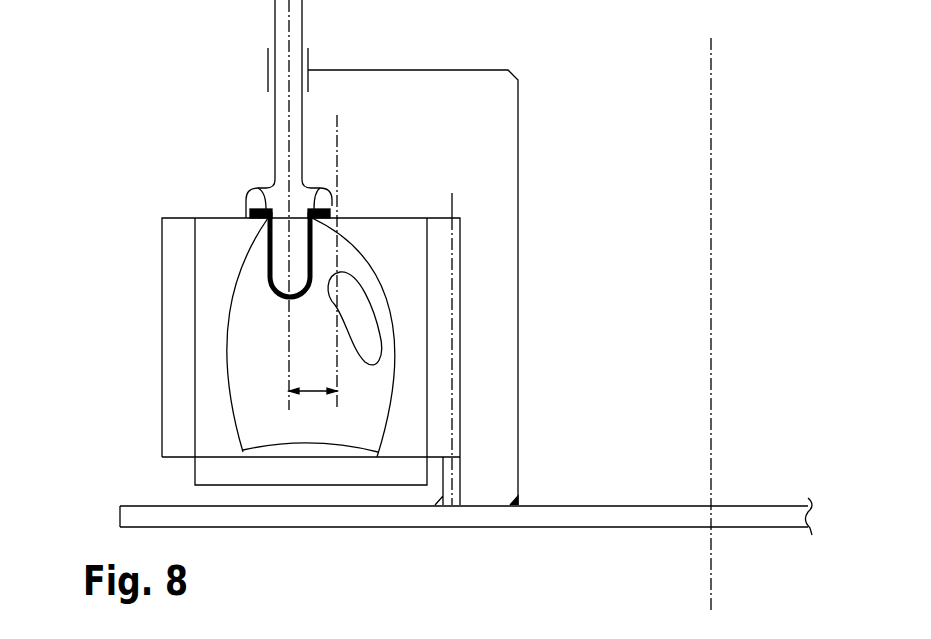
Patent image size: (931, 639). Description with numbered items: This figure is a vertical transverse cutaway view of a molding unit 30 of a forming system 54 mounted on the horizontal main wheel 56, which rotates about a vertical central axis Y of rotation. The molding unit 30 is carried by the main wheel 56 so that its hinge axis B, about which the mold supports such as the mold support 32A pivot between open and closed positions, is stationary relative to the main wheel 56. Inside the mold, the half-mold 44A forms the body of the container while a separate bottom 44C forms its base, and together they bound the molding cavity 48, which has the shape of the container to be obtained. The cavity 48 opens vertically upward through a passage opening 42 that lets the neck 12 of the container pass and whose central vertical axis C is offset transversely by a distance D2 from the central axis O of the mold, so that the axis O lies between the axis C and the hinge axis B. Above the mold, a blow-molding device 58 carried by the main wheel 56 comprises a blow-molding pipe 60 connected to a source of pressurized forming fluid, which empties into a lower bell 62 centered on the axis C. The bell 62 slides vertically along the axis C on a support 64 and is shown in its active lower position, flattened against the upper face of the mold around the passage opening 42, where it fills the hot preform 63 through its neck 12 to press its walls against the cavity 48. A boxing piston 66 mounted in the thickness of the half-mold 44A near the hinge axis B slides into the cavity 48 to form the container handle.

The neck 12 is at (317, 176).
The passage opening 42 is at (250, 186).
The blow-molding pipe 60 is at (275, 113).
The lower bell 62 is at (250, 206).
The hot preform 63 is at (267, 263).
The central vertical axis of the passage opening C is at (290, 32).
The central axis of the mold O is at (338, 205).
The blow-molding device 58 is at (315, 132).
The offset distance D2 is at (313, 405).
The support 64 is at (519, 223).
The mold support 32A is at (443, 377).
The molding unit 30 is at (138, 298).
The forming system 54 is at (82, 128).
The hinge axis B is at (453, 204).
The molding cavity 48 is at (230, 308).
The half-mold 44A is at (208, 432).
The bottom 44C is at (315, 449).
The boxing piston 66 is at (357, 310).
The main wheel 56 is at (750, 517).
The axis of rotation Y is at (712, 145).